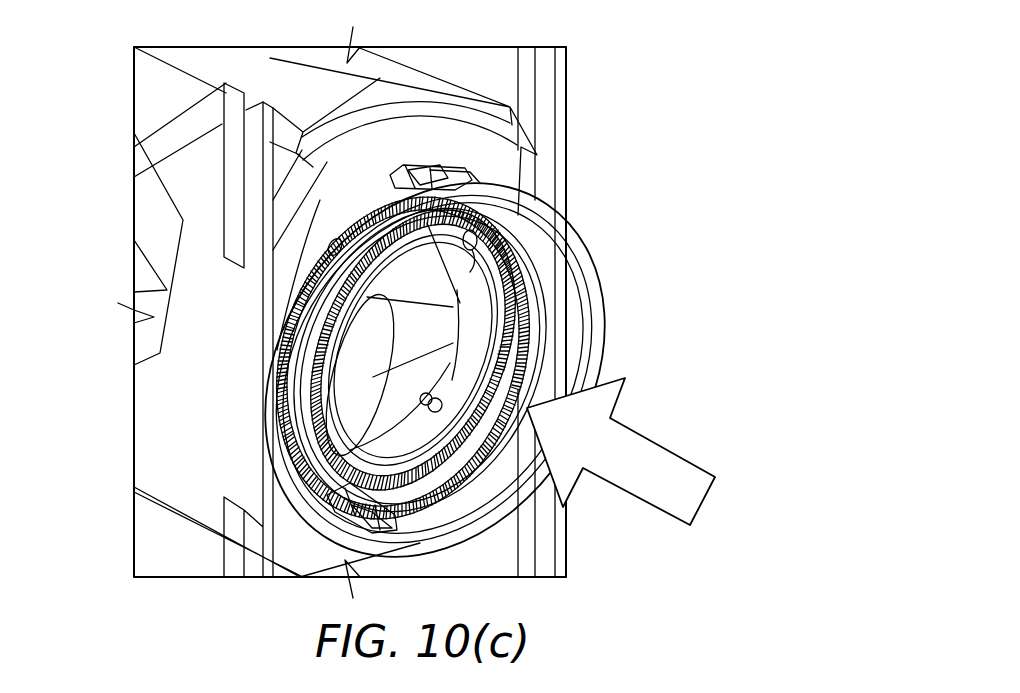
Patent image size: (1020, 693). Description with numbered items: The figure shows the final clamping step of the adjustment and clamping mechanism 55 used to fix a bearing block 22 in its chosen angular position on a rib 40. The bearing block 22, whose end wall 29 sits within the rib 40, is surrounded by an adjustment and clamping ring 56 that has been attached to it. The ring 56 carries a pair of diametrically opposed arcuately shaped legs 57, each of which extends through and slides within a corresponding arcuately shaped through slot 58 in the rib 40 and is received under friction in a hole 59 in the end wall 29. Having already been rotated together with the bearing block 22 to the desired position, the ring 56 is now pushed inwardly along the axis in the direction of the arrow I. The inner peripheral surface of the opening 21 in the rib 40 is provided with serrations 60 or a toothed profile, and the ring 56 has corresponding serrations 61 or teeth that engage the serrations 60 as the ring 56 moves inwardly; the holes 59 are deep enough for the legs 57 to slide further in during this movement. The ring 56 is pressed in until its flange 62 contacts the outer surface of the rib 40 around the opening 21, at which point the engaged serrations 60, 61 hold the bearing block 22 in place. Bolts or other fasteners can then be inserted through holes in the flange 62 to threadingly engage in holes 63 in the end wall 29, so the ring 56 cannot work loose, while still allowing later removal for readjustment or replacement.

The bearing block 22 is at (205, 60).
The end wall 29 is at (458, 92).
The adjustment and clamping mechanism 55 is at (583, 150).
The adjustment and clamping ring 56 is at (600, 297).
The legs 57 is at (417, 168).
The through slots 58 is at (395, 178).
The holes 59 is at (446, 165).
The serrations 60 is at (500, 373).
The serrations 61 is at (550, 236).
The flange 62 is at (578, 320).
The holes 63 is at (337, 247).
The opening 21 is at (455, 312).
The rib 40 is at (500, 546).
The arrow I is at (660, 450).